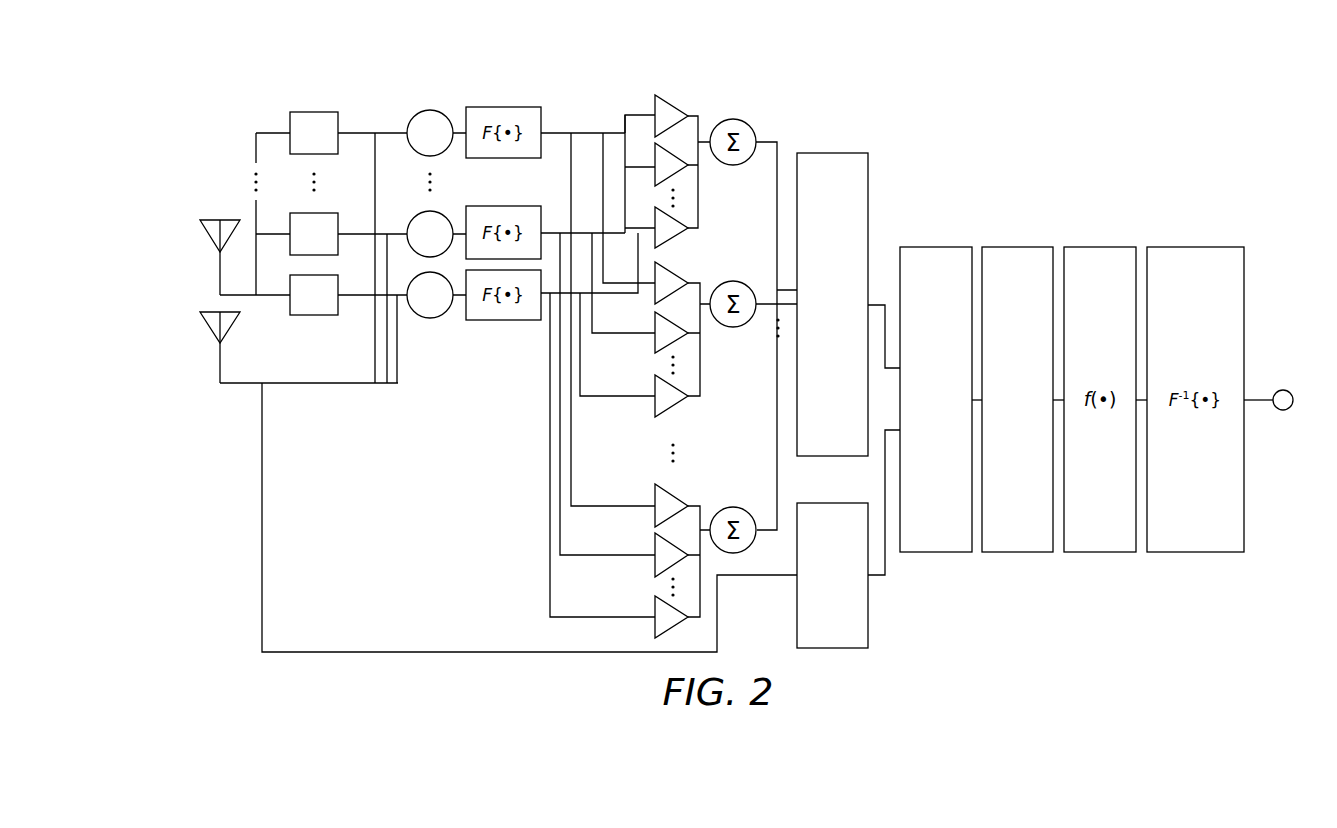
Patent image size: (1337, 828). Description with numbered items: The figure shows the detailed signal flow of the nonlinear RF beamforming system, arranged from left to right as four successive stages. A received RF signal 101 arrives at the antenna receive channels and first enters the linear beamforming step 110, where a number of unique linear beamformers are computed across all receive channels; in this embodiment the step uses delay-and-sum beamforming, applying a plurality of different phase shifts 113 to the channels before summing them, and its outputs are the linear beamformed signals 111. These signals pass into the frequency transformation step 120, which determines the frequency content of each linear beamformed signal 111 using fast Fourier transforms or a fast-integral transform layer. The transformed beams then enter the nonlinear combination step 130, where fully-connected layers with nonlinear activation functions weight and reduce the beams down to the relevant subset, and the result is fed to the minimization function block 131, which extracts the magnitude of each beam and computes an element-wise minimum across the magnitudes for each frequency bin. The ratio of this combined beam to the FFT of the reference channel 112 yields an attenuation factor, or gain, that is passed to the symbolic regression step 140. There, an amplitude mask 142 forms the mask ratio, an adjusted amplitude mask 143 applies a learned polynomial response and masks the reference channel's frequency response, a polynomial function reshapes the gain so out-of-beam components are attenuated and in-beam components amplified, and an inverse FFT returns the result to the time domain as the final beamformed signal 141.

The received RF signal 101 is at (213, 250).
The linear beamforming step 110 is at (455, 90).
The linear beamformed signals 111 is at (451, 298).
The reference channel 112 is at (868, 617).
The phase shifts 113 is at (312, 315).
The frequency transformation step 120 is at (455, 90).
The nonlinear combination step 130 is at (570, 90).
The minimization function block 131 is at (868, 172).
The symbolic regression step 140 is at (892, 90).
The final beamformed signal 141 is at (1283, 410).
The amplitude mask 142 is at (940, 247).
The adjusted amplitude mask 143 is at (1027, 247).